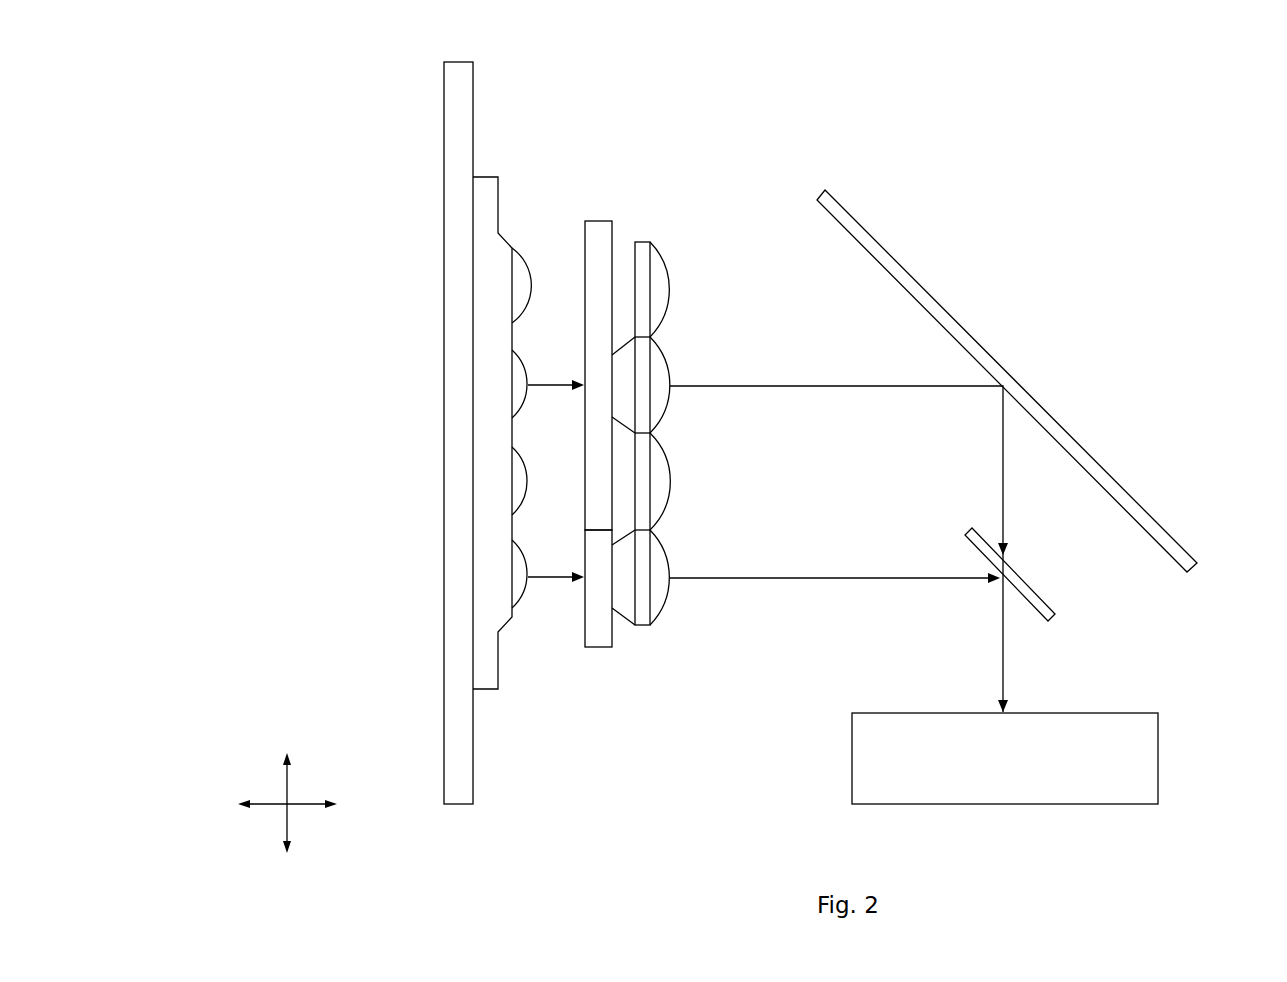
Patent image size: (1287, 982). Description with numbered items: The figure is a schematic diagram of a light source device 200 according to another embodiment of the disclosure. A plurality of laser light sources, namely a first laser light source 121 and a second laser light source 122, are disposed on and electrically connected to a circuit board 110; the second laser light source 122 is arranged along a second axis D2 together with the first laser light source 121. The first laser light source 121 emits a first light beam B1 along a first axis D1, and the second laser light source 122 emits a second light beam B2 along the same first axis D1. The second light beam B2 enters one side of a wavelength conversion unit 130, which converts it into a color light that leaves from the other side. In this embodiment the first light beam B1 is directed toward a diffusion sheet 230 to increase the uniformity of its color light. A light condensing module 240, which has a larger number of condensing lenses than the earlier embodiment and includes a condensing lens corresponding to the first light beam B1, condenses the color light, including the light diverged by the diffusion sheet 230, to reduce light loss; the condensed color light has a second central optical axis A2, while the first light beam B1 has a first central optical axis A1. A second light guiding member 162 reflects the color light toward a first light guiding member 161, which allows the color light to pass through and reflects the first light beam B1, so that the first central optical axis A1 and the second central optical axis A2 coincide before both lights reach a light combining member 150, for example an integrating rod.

The light source device 200 is at (347, 32).
The circuit board 110 is at (457, 62).
The second laser light source 122 is at (512, 350).
The first laser light source 121 is at (523, 600).
The wavelength conversion unit 130 is at (597, 221).
The diffusion sheet 230 is at (597, 648).
The light condensing module 240 is at (643, 242).
The second light guiding member 162 is at (1117, 483).
The first light guiding member 161 is at (1027, 580).
The light combining member 150 is at (852, 760).
The first central optical axis A1 is at (822, 577).
The second central optical axis A2 is at (822, 385).
The first light beam B1 is at (558, 578).
The second light beam B2 is at (551, 383).
The first axis D1 is at (291, 804).
The second axis D2 is at (286, 805).